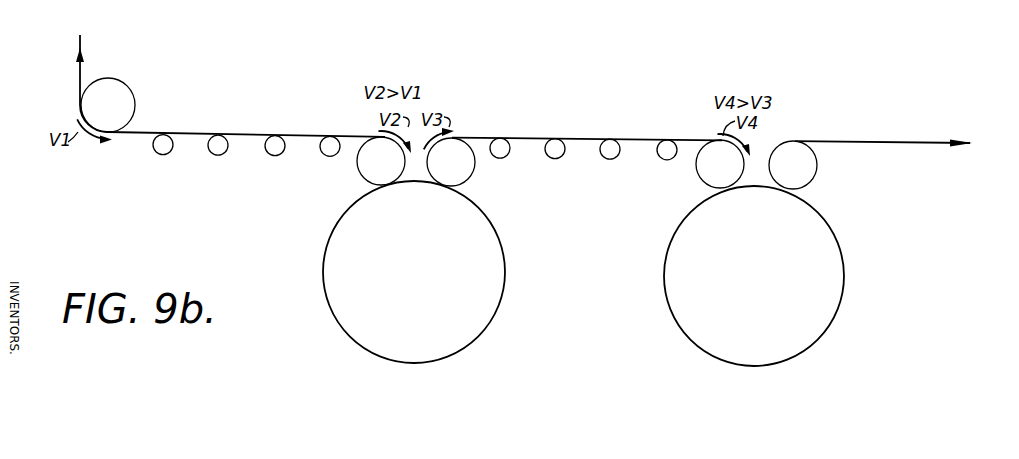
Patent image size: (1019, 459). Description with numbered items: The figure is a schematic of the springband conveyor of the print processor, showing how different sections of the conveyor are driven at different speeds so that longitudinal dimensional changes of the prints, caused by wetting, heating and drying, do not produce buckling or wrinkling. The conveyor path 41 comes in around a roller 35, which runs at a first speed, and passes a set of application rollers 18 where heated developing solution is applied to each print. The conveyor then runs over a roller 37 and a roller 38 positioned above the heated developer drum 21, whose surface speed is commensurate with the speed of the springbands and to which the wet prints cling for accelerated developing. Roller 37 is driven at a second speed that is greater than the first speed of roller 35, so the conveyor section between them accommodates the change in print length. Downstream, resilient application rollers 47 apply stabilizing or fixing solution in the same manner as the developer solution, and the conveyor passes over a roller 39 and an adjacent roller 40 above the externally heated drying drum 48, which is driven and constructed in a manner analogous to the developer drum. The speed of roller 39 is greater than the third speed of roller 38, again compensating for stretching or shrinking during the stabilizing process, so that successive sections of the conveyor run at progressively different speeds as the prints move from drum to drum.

The application rollers 18 is at (212, 152).
The heated developer drum 21 is at (492, 293).
The roller 35 is at (123, 80).
The roller 37 is at (365, 171).
The roller 38 is at (460, 173).
The roller 39 is at (703, 177).
The nip roller 40 is at (806, 172).
The web 41 is at (239, 133).
The resilient application rollers 47 is at (547, 154).
The drying drum 48 is at (835, 292).